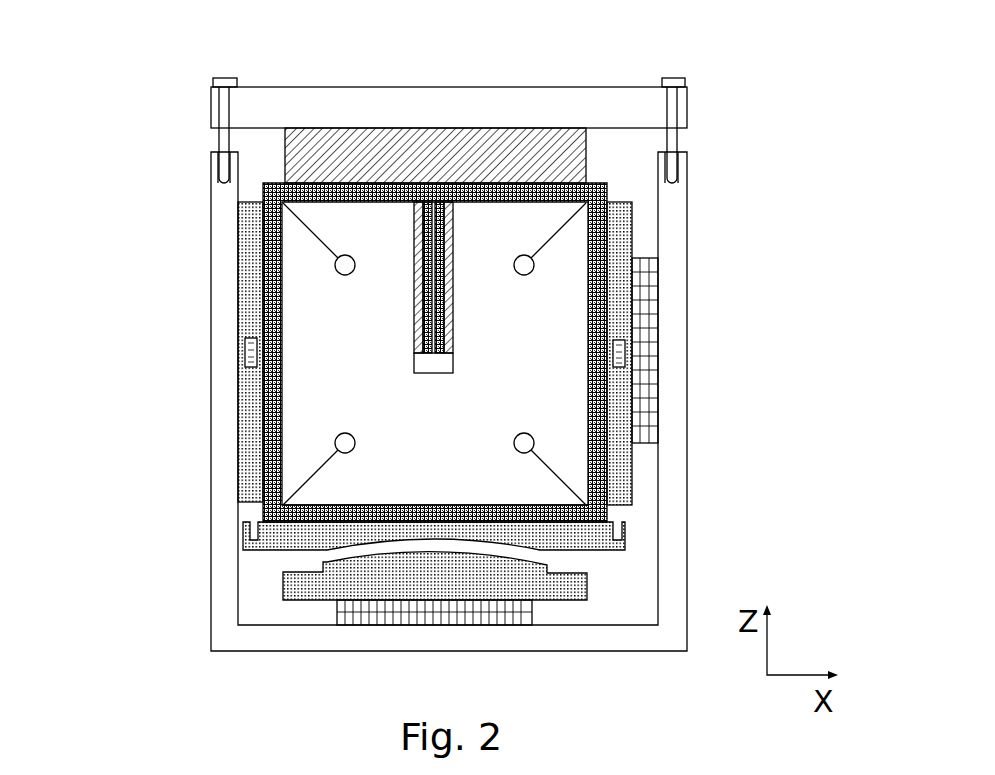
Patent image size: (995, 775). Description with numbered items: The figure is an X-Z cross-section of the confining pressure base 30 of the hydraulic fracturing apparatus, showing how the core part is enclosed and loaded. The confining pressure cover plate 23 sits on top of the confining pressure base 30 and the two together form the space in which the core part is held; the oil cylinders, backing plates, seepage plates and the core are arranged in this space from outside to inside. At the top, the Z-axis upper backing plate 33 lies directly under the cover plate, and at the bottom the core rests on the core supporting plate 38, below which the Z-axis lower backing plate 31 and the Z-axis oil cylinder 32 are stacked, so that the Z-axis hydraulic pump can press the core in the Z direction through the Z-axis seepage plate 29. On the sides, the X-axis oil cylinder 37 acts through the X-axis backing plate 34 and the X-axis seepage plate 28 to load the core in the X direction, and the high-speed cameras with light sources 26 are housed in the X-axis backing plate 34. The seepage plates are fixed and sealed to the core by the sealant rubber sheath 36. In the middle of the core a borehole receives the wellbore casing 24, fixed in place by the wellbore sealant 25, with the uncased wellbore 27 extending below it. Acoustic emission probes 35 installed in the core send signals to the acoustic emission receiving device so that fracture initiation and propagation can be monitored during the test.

The confining pressure cover plate 23 is at (369, 112).
The wellbore casing 24 is at (419, 241).
The wellbore sealant 25 is at (419, 302).
The high-speed cameras with light sources 26 is at (238, 354).
The uncased wellbore 27 is at (252, 382).
The X-axis seepage plate 28 is at (275, 451).
The Z-axis seepage plate 29 is at (320, 488).
The confining pressure base 30 is at (220, 511).
The Z-axis lower backing plate 31 is at (283, 583).
The Z-axis oil cylinder 32 is at (337, 612).
The Z-axis upper backing plate 33 is at (586, 171).
The X-axis backing plate 34 is at (633, 230).
The acoustic emission probes 35 is at (535, 272).
The sealant rubber sheath 36 is at (602, 417).
The X-axis oil cylinder 37 is at (739, 393).
The core supporting plate 38 is at (545, 561).